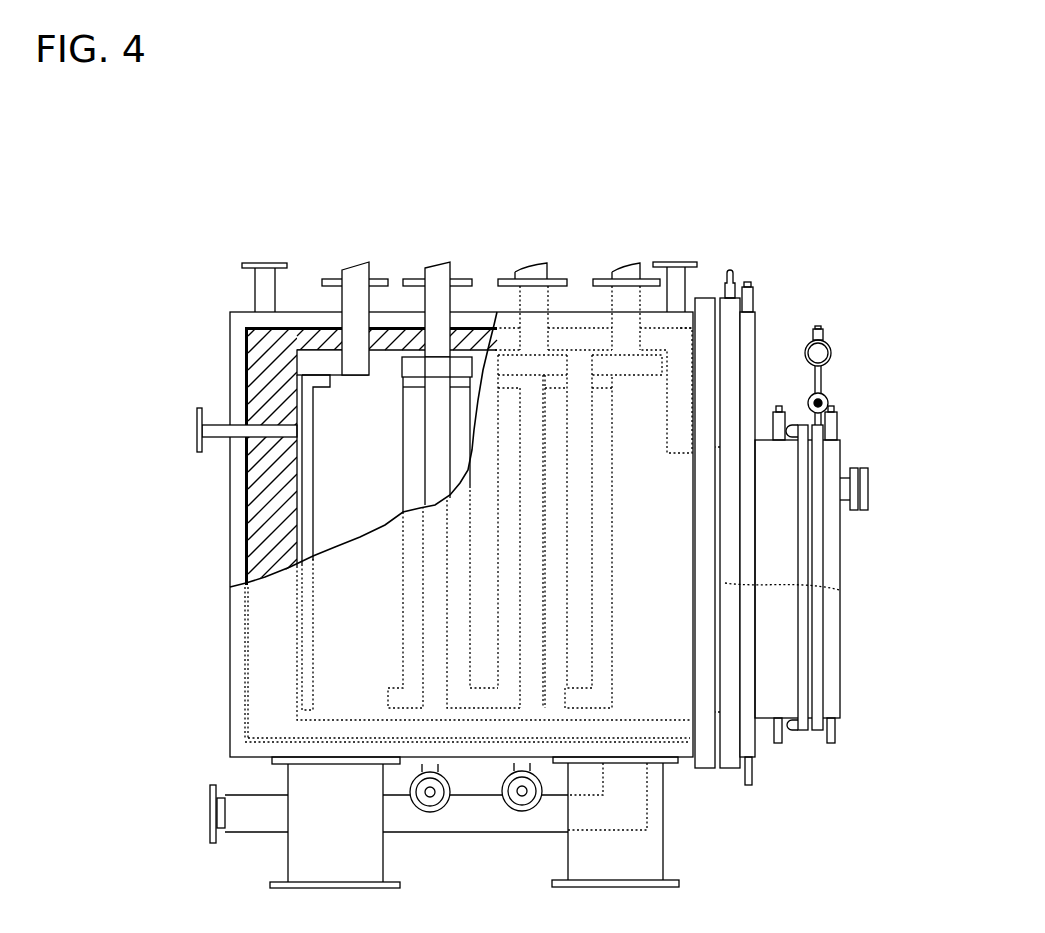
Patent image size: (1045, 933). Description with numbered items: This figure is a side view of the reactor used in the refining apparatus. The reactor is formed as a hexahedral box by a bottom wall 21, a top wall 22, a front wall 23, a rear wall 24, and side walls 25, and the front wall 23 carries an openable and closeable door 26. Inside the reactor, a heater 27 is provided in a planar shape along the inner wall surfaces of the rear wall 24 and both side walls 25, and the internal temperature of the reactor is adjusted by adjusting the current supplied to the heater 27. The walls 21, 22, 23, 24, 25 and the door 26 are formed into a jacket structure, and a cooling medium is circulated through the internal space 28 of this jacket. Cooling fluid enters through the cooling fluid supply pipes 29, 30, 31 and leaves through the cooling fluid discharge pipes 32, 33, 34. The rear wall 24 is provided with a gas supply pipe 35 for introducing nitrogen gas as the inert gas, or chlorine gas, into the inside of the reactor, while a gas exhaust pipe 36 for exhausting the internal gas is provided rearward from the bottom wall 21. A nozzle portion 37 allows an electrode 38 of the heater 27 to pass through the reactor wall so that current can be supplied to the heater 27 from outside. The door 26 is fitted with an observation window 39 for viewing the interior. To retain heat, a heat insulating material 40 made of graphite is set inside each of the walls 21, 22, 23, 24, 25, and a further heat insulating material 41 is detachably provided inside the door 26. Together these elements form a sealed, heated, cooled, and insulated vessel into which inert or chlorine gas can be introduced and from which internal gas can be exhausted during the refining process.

The bottom wall 21 is at (245, 740).
The top wall 22 is at (300, 310).
The front wall 23 is at (753, 333).
The rear wall 24 is at (230, 630).
The side walls 25 is at (682, 678).
The door 26 is at (832, 452).
The heater 27 is at (300, 525).
The internal space 28 is at (237, 372).
The cooling fluid supply pipe 29 is at (430, 812).
The cooling fluid supply pipe 30 is at (783, 740).
The cooling fluid supply pipe 31 is at (838, 737).
The cooling fluid discharge pipe 32 is at (672, 262).
The cooling fluid discharge pipe 33 is at (746, 282).
The cooling fluid discharge pipe 34 is at (833, 406).
The gas supply pipe 35 is at (197, 436).
The gas exhaust pipe 36 is at (208, 828).
The nozzle portion 37 is at (377, 279).
The electrode 38 is at (437, 262).
The observation window 39 is at (870, 490).
The heat insulating material 40 is at (265, 352).
The heat insulating material 41 is at (840, 590).